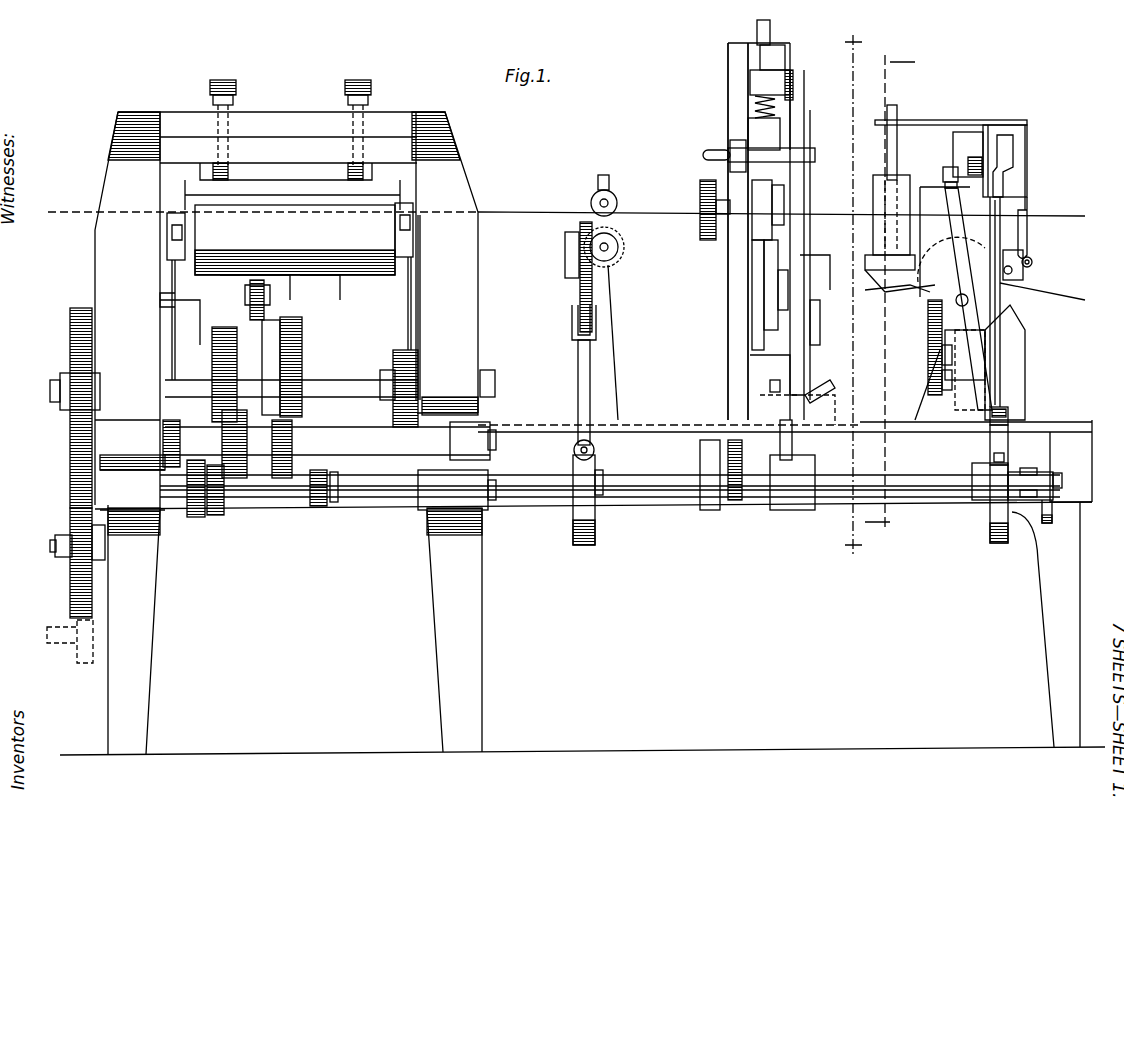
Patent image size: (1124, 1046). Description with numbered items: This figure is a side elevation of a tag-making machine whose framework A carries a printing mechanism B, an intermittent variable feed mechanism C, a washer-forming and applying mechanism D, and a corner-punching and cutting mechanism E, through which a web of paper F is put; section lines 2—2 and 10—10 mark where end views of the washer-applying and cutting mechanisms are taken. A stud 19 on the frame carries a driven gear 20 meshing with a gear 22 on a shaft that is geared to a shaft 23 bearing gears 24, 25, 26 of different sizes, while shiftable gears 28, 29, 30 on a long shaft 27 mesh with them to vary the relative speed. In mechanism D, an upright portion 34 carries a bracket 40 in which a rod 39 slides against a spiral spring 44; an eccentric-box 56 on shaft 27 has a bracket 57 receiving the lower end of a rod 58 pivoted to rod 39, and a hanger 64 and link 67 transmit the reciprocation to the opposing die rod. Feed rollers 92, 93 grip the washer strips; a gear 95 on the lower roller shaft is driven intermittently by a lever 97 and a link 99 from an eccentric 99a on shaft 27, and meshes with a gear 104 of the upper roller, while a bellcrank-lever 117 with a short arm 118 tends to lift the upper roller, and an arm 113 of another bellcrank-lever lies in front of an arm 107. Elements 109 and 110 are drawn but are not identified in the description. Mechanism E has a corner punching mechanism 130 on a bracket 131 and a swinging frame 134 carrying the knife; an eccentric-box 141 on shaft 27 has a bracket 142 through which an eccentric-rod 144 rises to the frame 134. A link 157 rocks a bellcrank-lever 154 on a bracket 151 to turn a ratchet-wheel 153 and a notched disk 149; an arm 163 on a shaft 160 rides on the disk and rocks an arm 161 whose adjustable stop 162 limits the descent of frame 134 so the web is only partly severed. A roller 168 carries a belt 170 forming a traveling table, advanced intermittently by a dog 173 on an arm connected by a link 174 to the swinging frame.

The framework A is at (655, 440).
The printing mechanism B is at (295, 293).
The intermittent variable feed mechanism C is at (594, 350).
The washer-forming and applying mechanism D is at (751, 213).
The corner-punching and cutting mechanism E is at (968, 131).
The web of paper F is at (64, 212).
The section line 2 is at (853, 290).
The section line 10 is at (897, 292).
The stud 19 is at (64, 558).
The gear 20 is at (70, 505).
The gear 22 is at (70, 345).
The shaft 23 is at (376, 440).
The gear 24 is at (212, 440).
The gear 25 is at (240, 440).
The gear 26 is at (282, 490).
The shaft 27 is at (682, 485).
The shiftable gear 28 is at (195, 518).
The shiftable gear 29 is at (216, 515).
The shiftable gear 30 is at (320, 506).
The upright portion 34 is at (730, 60).
The rod 39 is at (768, 24).
The bracket 40 is at (778, 52).
The spiral spring 44 is at (754, 106).
The eccentric-box 56 is at (762, 506).
The bracket 57 is at (800, 416).
The rod 58 is at (798, 112).
The hanger 64 is at (766, 300).
The link 67 is at (796, 330).
The roller 92 is at (796, 192).
The roller 93 is at (768, 238).
The gear 95 is at (712, 236).
The lever 97 is at (760, 262).
The link 99 is at (762, 276).
The eccentric 99a is at (732, 508).
The gear 104 is at (706, 180).
The arm 107 is at (886, 122).
The arm 109 is at (850, 284).
The pin 110 is at (840, 320).
The arm 113 is at (728, 150).
The bellcrank-lever 117 is at (700, 216).
The short arm 118 is at (812, 130).
The corner punching mechanism 130 is at (815, 155).
The bracket 131 is at (896, 276).
The swinging frame 134 is at (980, 135).
The eccentric-box 141 is at (1000, 512).
The bracket 142 is at (1000, 432).
The eccentric-rod 144 is at (1000, 386).
The disk 149 is at (930, 316).
The bracket 151 is at (938, 376).
The ratchet-wheel 153 is at (938, 355).
The bellcrank-lever 154 is at (1000, 352).
The link 157 is at (1000, 332).
The shaft 160 is at (1000, 312).
The arm 161 is at (906, 212).
The stop 162 is at (948, 166).
The arm 163 is at (966, 262).
The roller 168 is at (1030, 228).
The belt 170 is at (1030, 275).
The spring-seated dog 173 is at (1002, 286).
The link 174 is at (1033, 260).